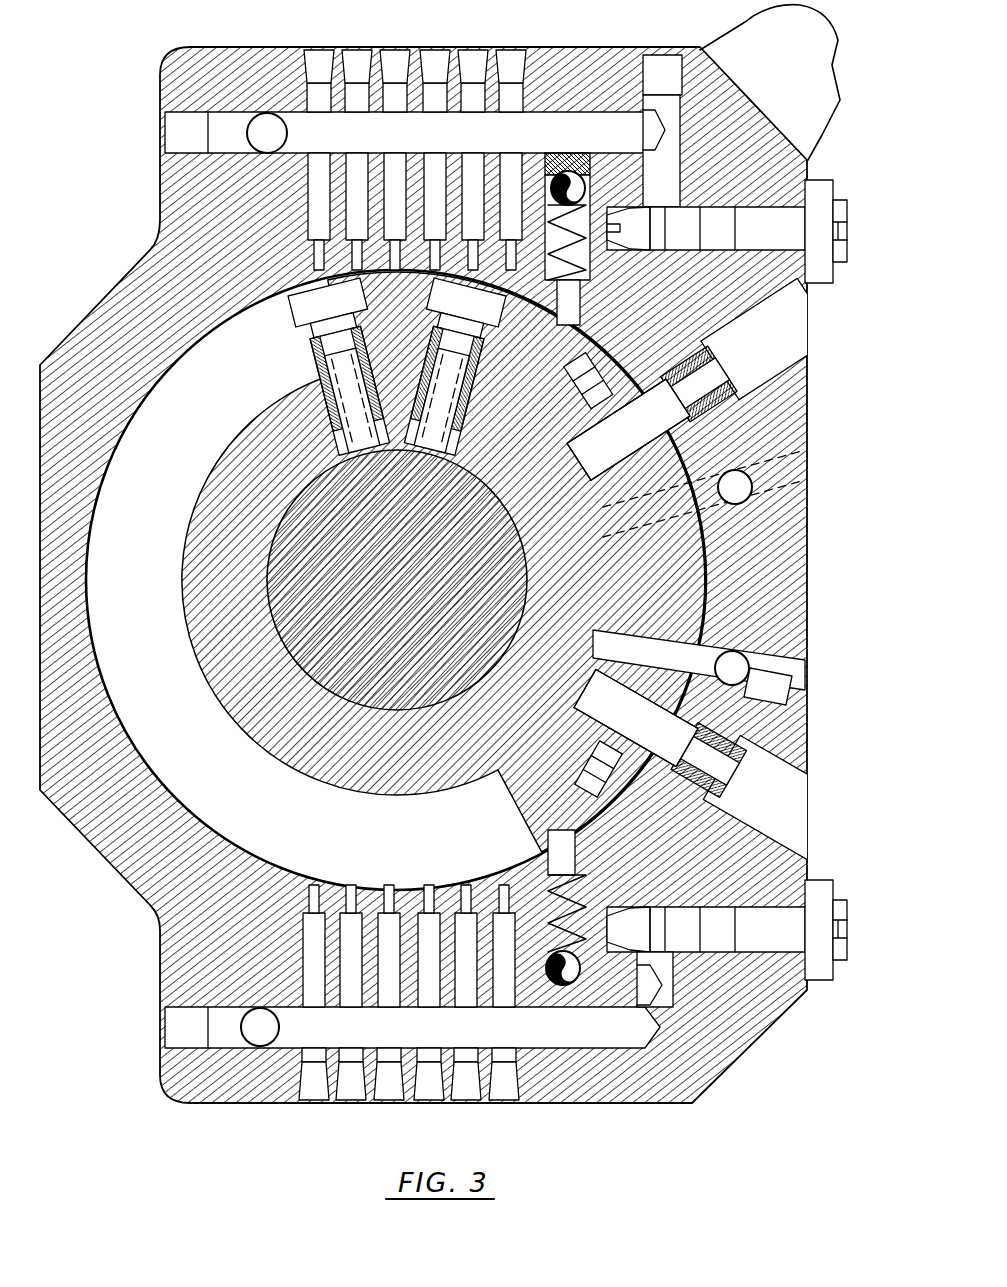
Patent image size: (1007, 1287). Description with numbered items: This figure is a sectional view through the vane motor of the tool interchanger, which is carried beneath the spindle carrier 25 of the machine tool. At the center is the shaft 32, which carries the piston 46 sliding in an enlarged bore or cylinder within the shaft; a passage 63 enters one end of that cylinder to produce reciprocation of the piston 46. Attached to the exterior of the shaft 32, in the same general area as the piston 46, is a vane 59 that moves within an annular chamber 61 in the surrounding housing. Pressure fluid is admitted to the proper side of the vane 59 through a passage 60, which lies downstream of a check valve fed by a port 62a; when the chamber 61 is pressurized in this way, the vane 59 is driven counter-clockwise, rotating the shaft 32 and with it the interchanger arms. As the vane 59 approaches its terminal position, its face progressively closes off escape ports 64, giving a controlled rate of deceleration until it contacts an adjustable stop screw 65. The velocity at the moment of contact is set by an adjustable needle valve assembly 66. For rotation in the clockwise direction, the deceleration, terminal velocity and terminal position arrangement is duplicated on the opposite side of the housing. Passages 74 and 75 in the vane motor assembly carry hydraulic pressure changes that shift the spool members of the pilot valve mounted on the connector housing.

The spindle carrier 25 is at (745, 26).
The shaft 32 is at (217, 528).
The piston 46 is at (300, 593).
The vane 59 is at (252, 312).
The passage 60 is at (570, 306).
The annular chamber 61 is at (158, 375).
The port 62a is at (240, 130).
The passage 63 is at (578, 186).
The escape ports 64 is at (393, 160).
The adjustable stop screw 65 is at (505, 392).
The adjustable needle valve assembly 66 is at (662, 230).
The passage 74 is at (740, 668).
The passage 75 is at (745, 490).